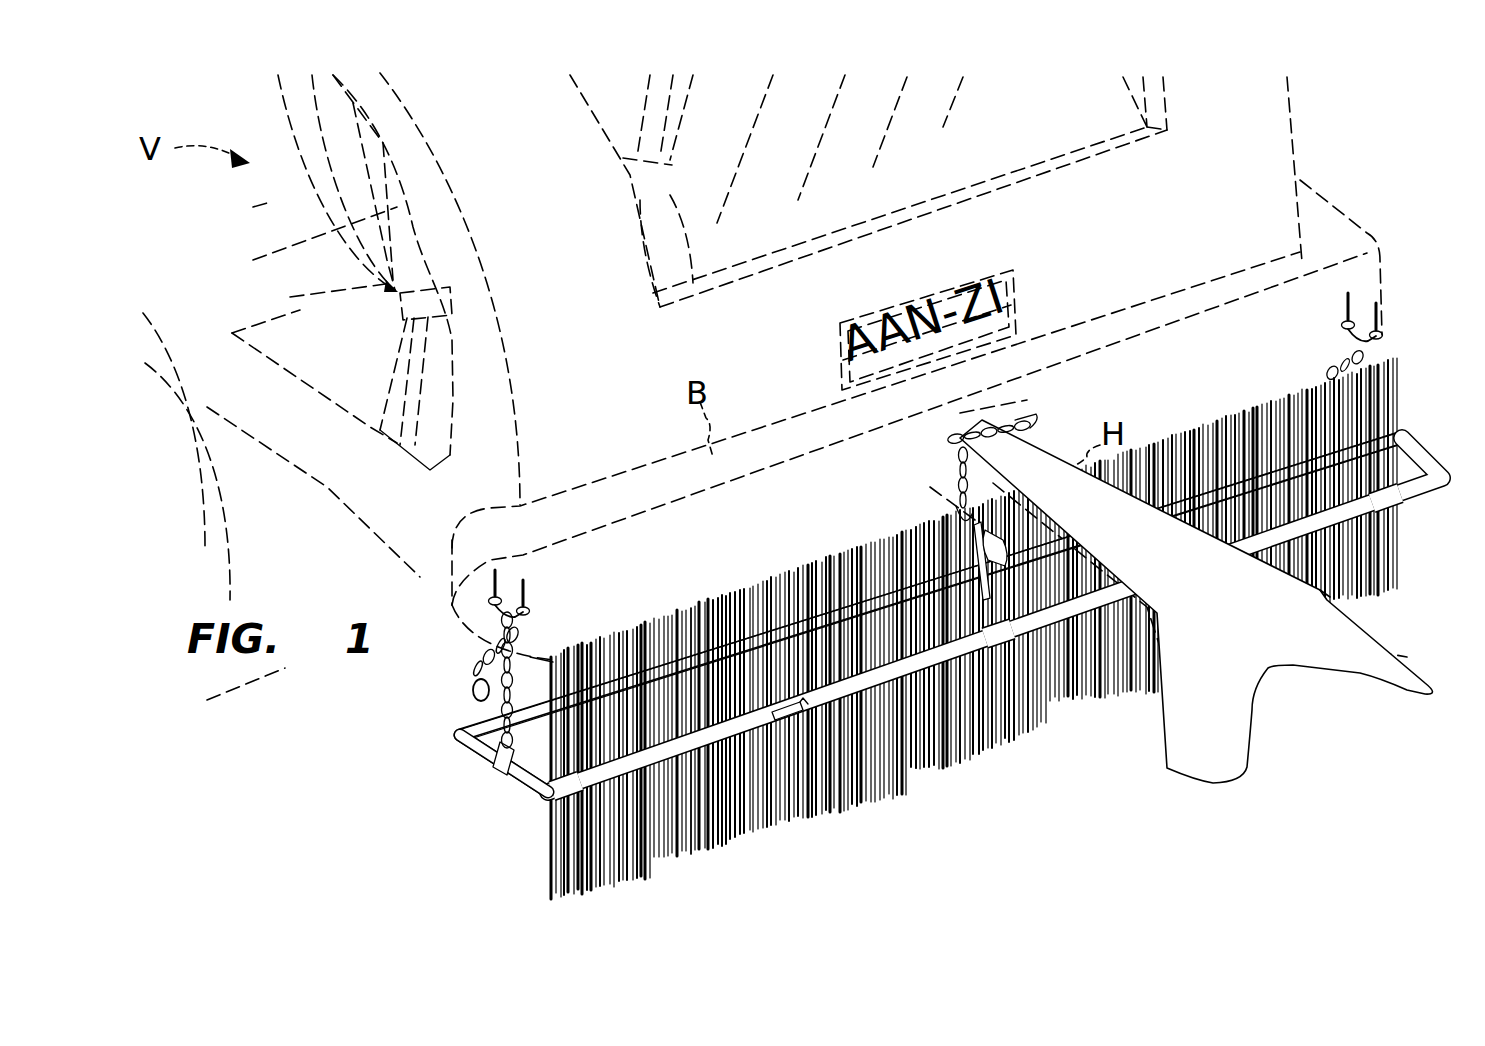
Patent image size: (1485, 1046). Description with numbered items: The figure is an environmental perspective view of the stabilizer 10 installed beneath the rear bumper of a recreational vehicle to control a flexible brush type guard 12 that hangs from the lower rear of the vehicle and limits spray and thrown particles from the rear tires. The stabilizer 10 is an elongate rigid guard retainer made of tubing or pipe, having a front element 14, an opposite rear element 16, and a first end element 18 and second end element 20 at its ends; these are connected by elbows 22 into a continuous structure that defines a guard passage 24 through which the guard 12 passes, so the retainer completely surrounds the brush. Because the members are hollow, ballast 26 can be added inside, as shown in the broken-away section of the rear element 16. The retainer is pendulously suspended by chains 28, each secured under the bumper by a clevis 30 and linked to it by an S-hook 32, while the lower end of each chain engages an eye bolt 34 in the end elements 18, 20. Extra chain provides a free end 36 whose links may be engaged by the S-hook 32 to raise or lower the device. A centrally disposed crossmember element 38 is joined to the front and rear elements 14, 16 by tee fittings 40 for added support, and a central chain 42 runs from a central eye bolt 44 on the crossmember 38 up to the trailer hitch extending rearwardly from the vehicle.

The stabilizer 10 is at (418, 806).
The brush type guard 12 is at (952, 766).
The front element 14 is at (530, 687).
The rear element 16 is at (692, 722).
The first end element 18 is at (497, 771).
The second end element 20 is at (1405, 433).
The elbows 22 is at (452, 736).
The guard passage 24 is at (917, 622).
The ballast 26 is at (797, 718).
The chains 28 is at (480, 707).
The clevis 30 is at (510, 586).
The S-hook 32 is at (502, 616).
The eye bolt 34 is at (492, 770).
The free end 36 is at (479, 669).
The central crossmember element 38 is at (985, 600).
The tee fittings 40 is at (1012, 624).
The central chain 42 is at (1006, 466).
The central eye bolt 44 is at (1000, 566).